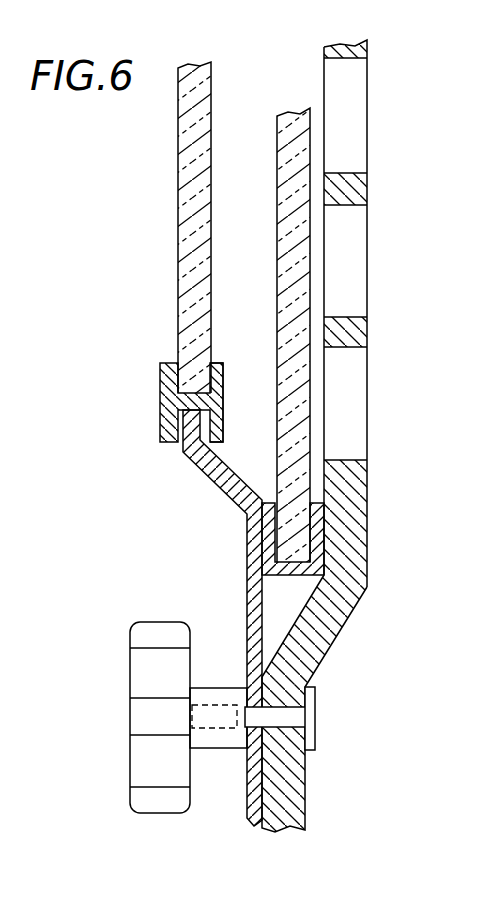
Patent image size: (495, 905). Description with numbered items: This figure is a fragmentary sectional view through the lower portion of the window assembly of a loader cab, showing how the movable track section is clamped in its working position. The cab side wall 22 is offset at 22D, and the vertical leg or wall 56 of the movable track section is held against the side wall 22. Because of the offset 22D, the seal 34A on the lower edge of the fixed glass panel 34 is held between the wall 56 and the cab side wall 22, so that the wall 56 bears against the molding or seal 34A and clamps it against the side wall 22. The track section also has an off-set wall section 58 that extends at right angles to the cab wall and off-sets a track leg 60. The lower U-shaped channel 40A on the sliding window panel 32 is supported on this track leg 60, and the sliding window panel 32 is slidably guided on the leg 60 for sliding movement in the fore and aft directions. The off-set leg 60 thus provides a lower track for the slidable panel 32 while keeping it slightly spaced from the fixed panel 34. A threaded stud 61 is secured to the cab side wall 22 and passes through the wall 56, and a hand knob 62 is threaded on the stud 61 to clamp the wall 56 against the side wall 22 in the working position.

The side wall 22 is at (310, 786).
The offset 22D is at (330, 606).
The sliding window panel 32 is at (177, 242).
The fixed glass panel 34 is at (279, 178).
The seal 34A is at (326, 528).
The lower U-shaped channel 40A is at (160, 405).
The vertical leg or wall 56 is at (263, 614).
The off-set wall section 58 is at (221, 490).
The track leg 60 is at (224, 412).
The threaded stud 61 is at (282, 712).
The hand knob 62 is at (152, 792).